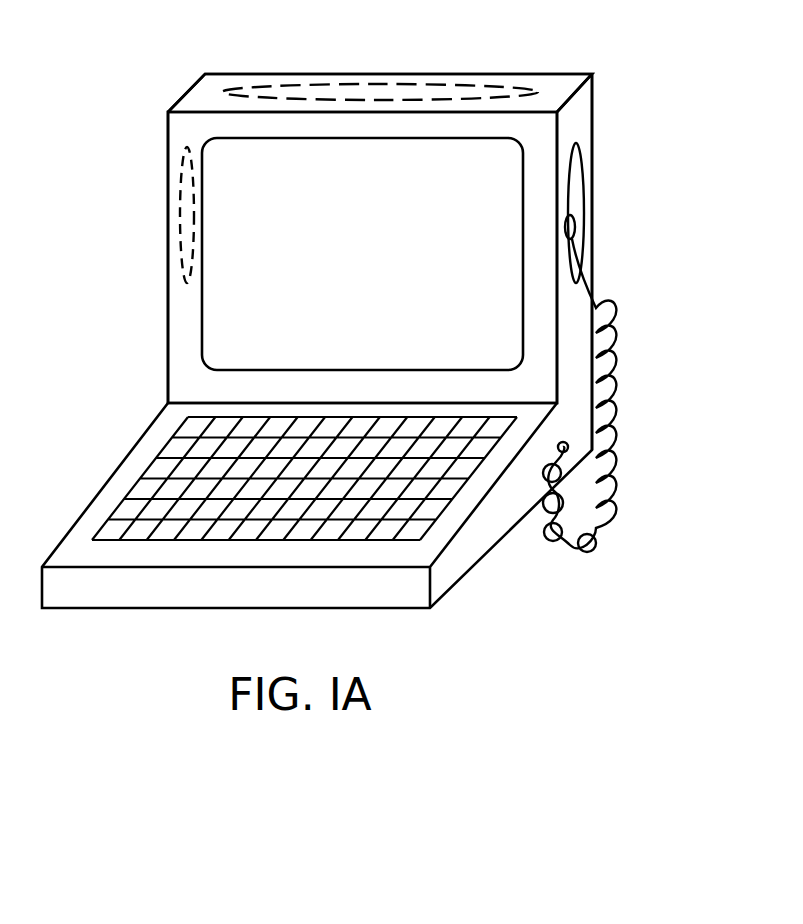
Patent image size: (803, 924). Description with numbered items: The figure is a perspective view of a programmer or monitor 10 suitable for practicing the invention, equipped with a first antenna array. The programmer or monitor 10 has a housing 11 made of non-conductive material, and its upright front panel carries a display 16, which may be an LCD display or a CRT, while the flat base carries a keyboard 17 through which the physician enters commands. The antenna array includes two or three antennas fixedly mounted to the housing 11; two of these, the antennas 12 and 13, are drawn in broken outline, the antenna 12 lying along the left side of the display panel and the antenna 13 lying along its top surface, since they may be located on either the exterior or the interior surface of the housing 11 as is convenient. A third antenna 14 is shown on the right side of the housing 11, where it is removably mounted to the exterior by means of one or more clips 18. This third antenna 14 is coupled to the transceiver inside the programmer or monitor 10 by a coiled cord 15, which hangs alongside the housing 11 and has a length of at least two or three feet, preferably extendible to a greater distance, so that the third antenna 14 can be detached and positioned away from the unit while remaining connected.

The programmer or monitor 10 is at (158, 104).
The housing 11 is at (594, 78).
The antenna 12 is at (178, 207).
The antenna 13 is at (375, 92).
The third antenna 14 is at (580, 190).
The coiled cord 15 is at (608, 441).
The display 16 is at (503, 168).
The keyboard 17 is at (170, 487).
The clip 18 is at (572, 228).